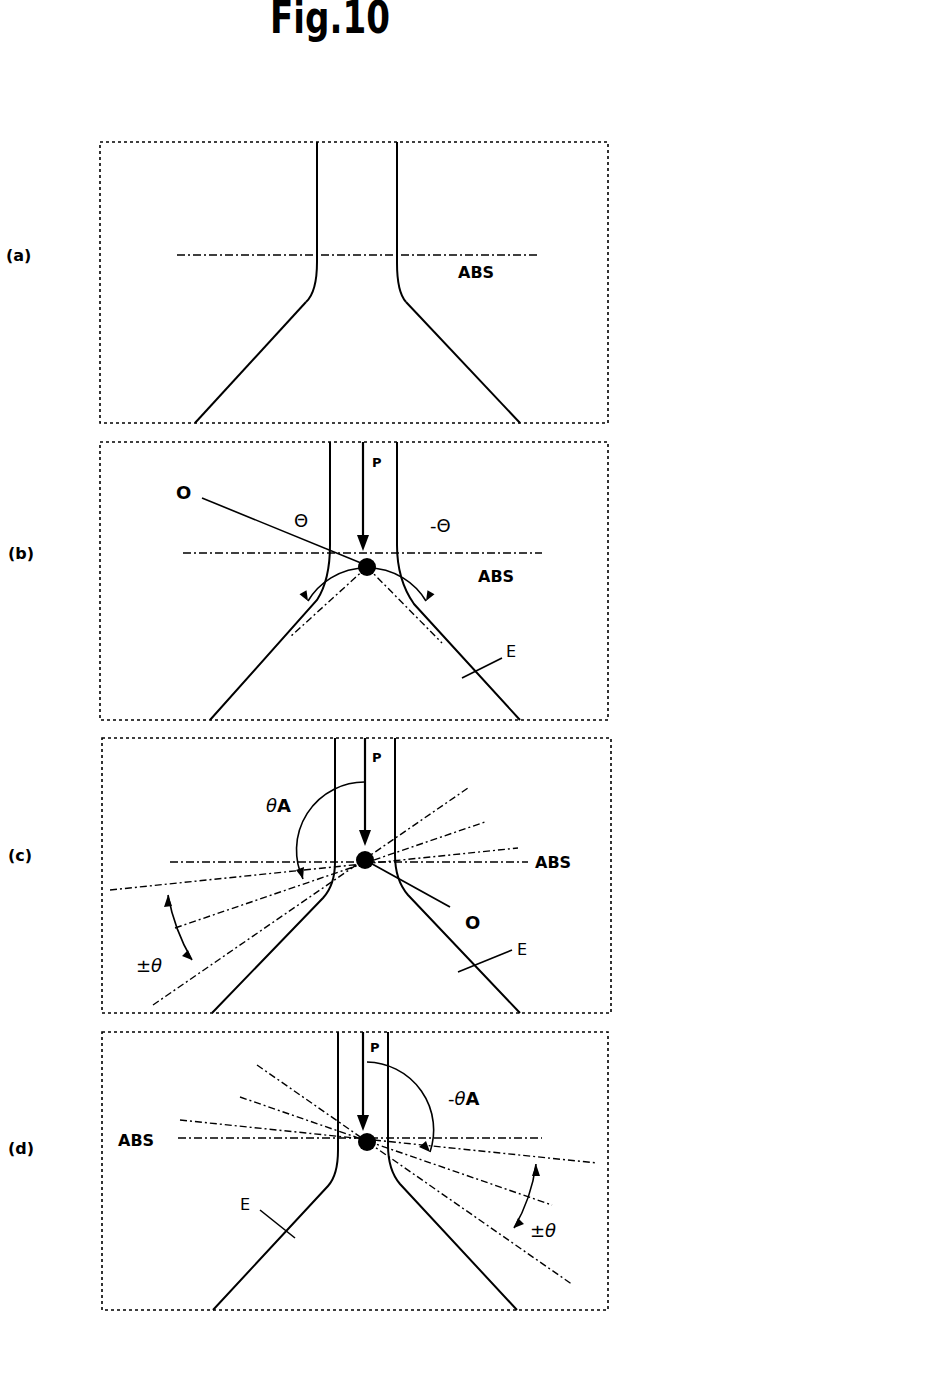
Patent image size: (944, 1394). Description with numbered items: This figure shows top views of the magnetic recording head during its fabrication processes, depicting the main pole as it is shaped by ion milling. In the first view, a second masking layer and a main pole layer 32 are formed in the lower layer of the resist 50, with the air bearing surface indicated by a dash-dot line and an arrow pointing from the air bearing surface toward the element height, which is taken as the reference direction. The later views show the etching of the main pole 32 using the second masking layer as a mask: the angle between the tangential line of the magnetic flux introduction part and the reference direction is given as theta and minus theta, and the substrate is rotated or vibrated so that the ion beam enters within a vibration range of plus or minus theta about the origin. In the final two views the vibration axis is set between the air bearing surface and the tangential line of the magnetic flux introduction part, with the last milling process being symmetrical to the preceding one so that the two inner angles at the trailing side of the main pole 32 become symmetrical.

The main pole 32 is at (414, 222).
The resist 50 is at (357, 362).